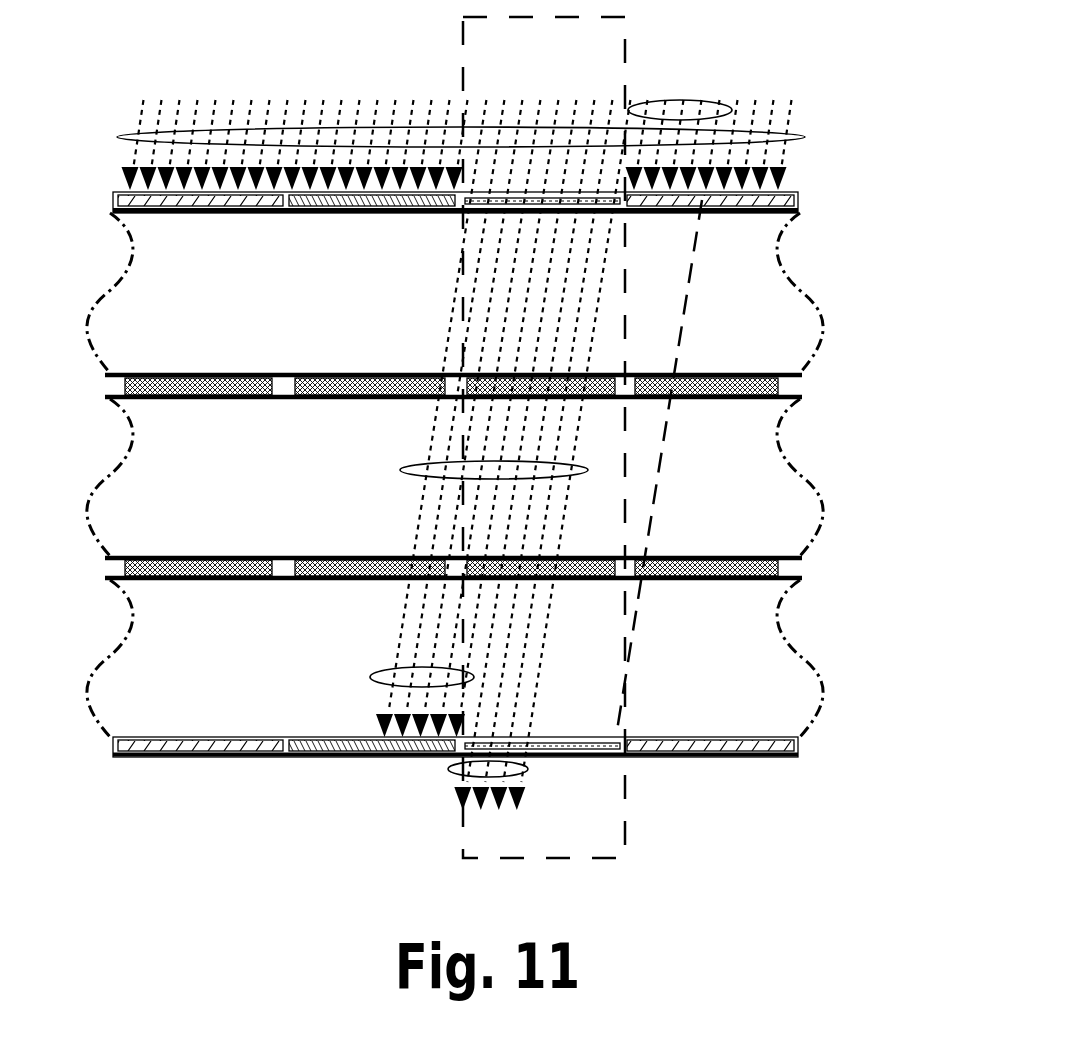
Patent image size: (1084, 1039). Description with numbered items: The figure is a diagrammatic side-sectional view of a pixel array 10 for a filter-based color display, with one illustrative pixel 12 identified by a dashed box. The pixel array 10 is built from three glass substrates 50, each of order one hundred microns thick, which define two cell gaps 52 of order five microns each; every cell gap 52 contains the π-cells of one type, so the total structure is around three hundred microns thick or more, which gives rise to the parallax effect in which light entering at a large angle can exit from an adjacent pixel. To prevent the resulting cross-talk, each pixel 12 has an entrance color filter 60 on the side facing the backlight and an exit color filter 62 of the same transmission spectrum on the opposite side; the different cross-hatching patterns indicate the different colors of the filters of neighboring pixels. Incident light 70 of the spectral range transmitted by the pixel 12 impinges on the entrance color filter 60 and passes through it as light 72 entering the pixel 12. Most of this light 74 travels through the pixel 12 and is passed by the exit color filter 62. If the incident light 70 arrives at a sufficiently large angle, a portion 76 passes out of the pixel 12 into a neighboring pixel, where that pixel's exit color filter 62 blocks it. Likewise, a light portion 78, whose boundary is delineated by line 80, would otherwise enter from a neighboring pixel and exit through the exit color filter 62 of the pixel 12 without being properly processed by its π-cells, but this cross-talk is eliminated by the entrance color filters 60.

The pixel array 10 is at (200, 825).
The pixel 12 is at (591, 436).
The glass substrate 50 is at (297, 312).
The cell gap 52 is at (92, 387).
The entrance color filter 60 is at (88, 203).
The exit color filter 62 is at (88, 748).
The incident light 70 is at (120, 137).
The light entering pixel 72 is at (402, 470).
The light passing through pixel 74 is at (528, 769).
The light portion passing into neighboring pixel 76 is at (372, 677).
The light portion from neighboring pixel 78 is at (732, 110).
The line delineating boundary of light portion 80 is at (662, 466).